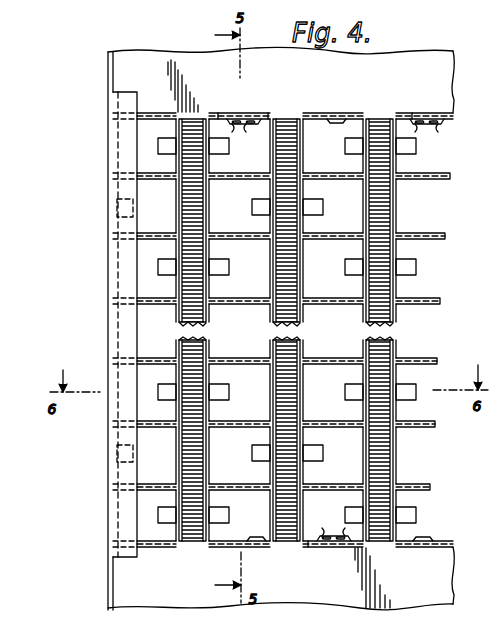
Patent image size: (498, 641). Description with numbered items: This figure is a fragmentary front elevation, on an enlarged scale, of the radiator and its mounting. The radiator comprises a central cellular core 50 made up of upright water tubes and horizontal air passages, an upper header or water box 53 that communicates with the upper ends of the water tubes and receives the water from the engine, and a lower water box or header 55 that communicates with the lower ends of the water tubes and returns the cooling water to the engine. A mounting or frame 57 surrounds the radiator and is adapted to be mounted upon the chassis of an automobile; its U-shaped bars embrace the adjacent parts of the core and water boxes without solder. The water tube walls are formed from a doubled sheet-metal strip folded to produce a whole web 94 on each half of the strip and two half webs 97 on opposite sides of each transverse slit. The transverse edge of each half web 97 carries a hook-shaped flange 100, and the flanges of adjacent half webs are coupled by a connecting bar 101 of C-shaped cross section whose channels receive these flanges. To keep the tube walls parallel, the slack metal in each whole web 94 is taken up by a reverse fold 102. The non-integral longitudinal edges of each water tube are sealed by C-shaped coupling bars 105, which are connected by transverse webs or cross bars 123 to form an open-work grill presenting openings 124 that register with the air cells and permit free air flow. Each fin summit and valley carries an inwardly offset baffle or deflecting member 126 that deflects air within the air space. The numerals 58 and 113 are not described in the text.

The central cellular core 50 is at (417, 330).
The upper header or water box 53 is at (281, 80).
The lower water box or header 55 is at (281, 578).
The mounting or frame 57 is at (269, 330).
The side wall 58 is at (108, 77).
The whole web 94 is at (357, 113).
The half web 97 is at (218, 112).
The hook-shaped flange 100 is at (235, 125).
The coupling, sealing or connecting bar 101 is at (237, 114).
The reversely folded part of whole web 102 is at (330, 120).
The coupling bar 105 is at (272, 187).
The panel 113 is at (490, 310).
The transverse web or cross bar 123 is at (438, 239).
The opening 124 is at (333, 268).
The inwardly offset baffle or deflecting member 126 is at (322, 202).